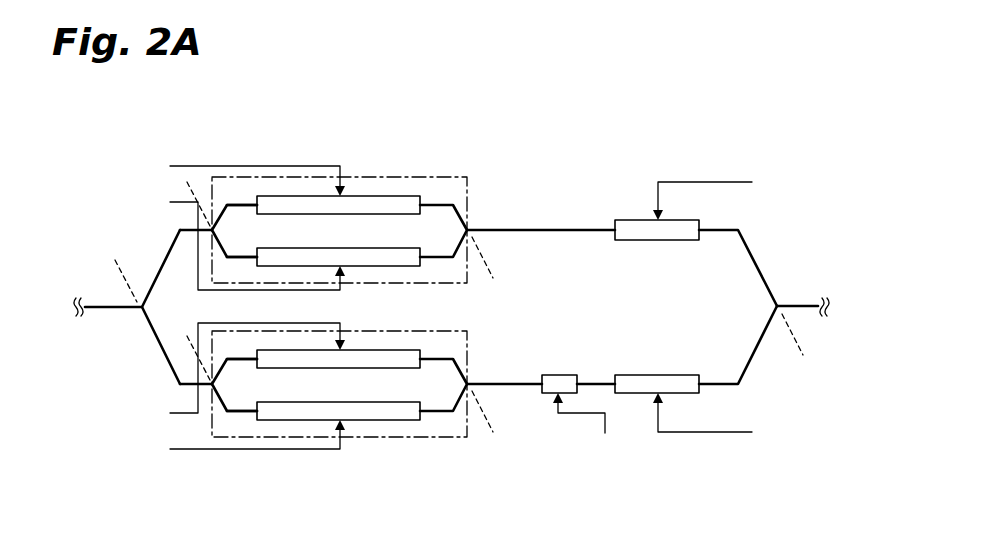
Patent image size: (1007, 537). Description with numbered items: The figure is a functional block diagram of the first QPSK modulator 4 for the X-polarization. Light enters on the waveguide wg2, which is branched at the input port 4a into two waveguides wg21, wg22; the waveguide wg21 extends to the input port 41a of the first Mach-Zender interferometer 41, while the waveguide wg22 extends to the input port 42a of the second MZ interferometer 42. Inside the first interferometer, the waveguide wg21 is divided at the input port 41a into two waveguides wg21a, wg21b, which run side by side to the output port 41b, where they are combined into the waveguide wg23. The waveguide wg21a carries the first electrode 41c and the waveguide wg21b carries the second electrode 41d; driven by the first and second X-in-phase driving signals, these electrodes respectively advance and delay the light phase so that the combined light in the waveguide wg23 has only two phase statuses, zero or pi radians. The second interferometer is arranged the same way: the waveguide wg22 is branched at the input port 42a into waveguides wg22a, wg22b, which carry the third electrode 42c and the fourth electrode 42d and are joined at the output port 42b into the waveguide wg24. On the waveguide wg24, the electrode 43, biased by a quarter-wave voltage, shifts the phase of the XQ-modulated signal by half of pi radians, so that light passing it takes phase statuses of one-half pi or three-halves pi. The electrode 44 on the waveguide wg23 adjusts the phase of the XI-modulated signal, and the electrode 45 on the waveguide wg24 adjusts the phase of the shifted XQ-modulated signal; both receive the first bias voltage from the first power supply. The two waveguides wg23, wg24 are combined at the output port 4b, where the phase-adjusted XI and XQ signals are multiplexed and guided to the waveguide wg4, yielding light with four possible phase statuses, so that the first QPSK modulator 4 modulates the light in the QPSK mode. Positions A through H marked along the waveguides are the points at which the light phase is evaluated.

The first QPSK modulator 4 is at (750, 128).
The input port 4a is at (140, 310).
The output port 4b is at (775, 305).
The first Mach-Zender interferometer 41 is at (452, 177).
The input port of first MZ interferometer 41a is at (218, 230).
The output port of first MZ interferometer 41b is at (471, 229).
The first electrode 41c is at (380, 195).
The second electrode 41d is at (373, 246).
The second Mach-Zender interferometer 42 is at (452, 331).
The input port of second MZ interferometer 42a is at (218, 384).
The output port of second MZ interferometer 42b is at (471, 383).
The third electrode 42c is at (380, 349).
The fourth electrode 42d is at (373, 400).
The electrode 43 is at (558, 372).
The electrode 44 is at (673, 218).
The electrode 45 is at (663, 373).
The waveguide wg2 is at (115, 302).
The waveguide wg21 is at (165, 258).
The waveguide wg22 is at (160, 350).
The waveguide wg21a is at (255, 204).
The waveguide wg21b is at (237, 258).
The waveguide wg22a is at (242, 357).
The waveguide wg22b is at (237, 412).
The waveguide wg23 is at (572, 232).
The waveguide wg24 is at (515, 388).
The waveguide wg4 is at (800, 310).